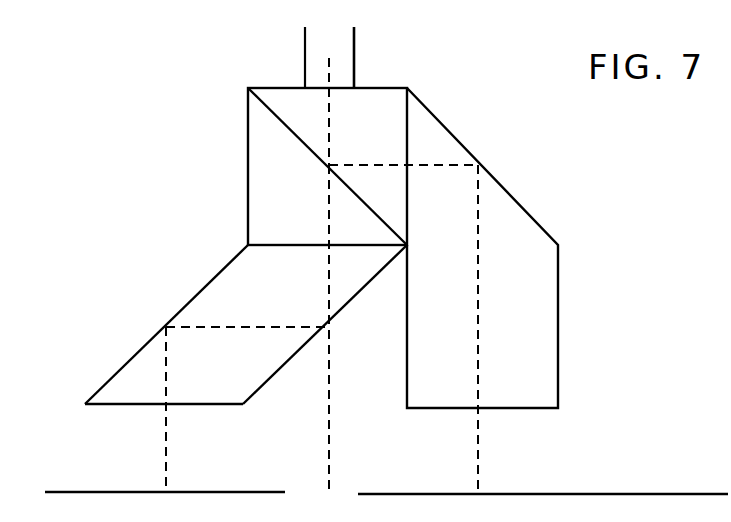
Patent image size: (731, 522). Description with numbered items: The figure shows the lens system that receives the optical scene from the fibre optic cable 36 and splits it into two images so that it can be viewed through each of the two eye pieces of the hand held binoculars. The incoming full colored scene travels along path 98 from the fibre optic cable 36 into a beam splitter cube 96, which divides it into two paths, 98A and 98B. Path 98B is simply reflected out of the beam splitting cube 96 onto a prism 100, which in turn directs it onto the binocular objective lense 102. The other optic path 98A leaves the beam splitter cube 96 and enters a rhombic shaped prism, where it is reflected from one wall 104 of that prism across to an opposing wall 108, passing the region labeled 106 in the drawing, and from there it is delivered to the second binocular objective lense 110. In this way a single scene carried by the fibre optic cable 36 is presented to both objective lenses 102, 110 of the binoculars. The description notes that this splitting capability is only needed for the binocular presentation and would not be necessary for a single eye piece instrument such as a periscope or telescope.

The fibre optic cable 36 is at (338, 50).
The beam splitter cube 96 is at (247, 132).
The path of incoming scene 98 is at (330, 130).
The optic path 98A is at (327, 190).
The optic path 98B is at (447, 165).
The prism 100 is at (513, 197).
The binocular objective lense 102 is at (612, 495).
The wall of rhombic shaped prism 104 is at (280, 368).
The exit face 106 is at (247, 383).
The opposing wall of rhombic shaped prism 108 is at (127, 358).
The second binocular objective lense 110 is at (92, 488).